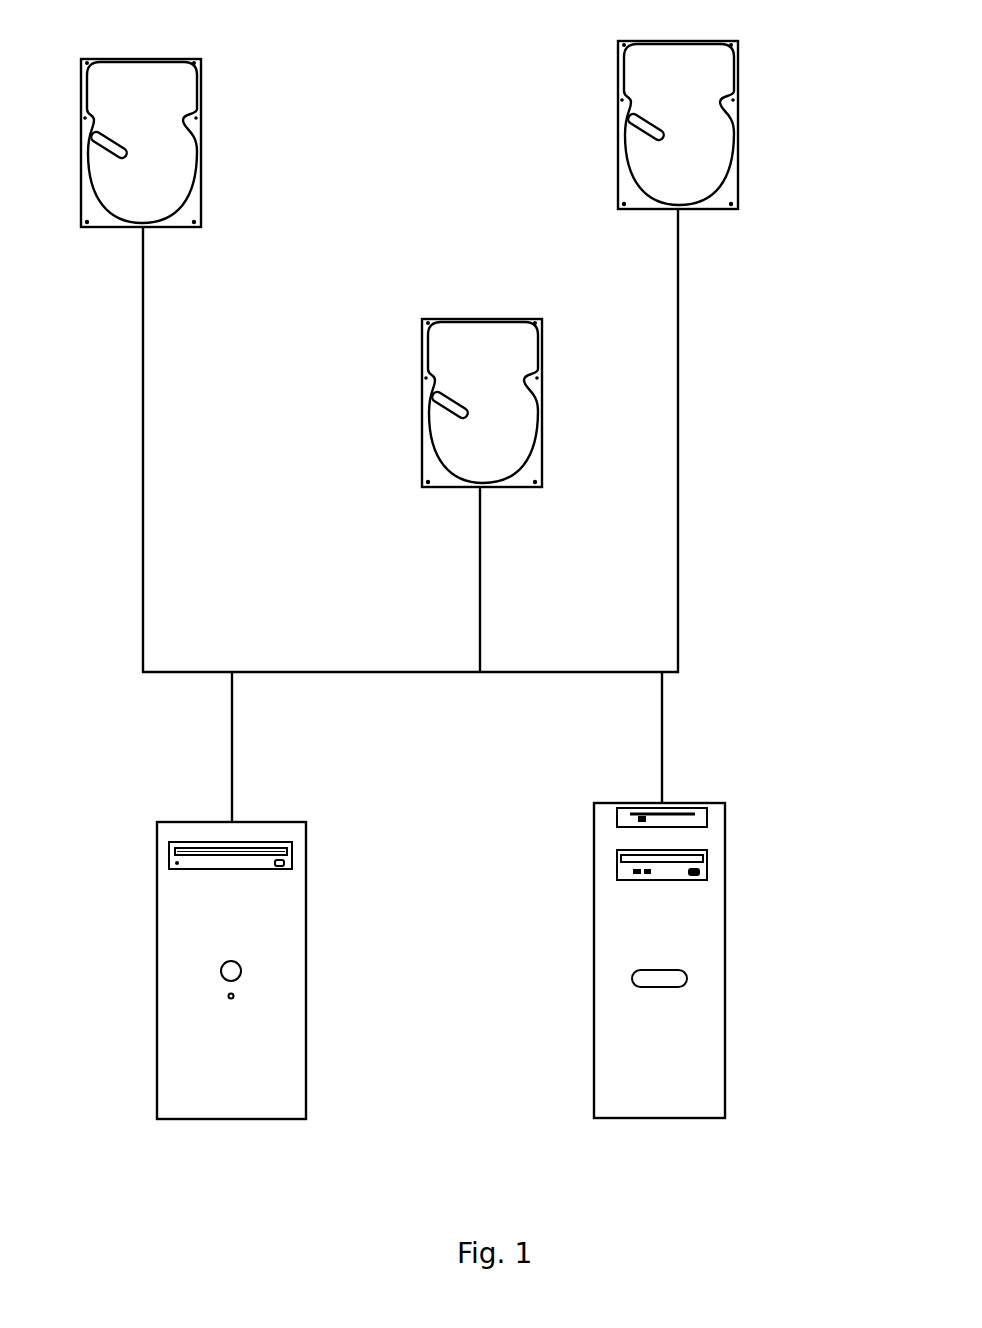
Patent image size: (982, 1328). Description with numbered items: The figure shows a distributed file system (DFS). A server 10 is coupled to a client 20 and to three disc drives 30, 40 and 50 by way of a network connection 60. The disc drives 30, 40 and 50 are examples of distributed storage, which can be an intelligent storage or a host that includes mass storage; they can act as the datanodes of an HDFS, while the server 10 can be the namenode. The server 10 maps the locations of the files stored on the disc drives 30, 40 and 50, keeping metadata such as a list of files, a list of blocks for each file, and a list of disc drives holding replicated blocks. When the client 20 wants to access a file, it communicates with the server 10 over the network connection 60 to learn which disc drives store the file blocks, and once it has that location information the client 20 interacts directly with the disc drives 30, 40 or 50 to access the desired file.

The server 10 is at (231, 1119).
The client 20 is at (725, 946).
The disc drive 30 is at (540, 487).
The disc drive 40 is at (737, 115).
The disc drive 50 is at (173, 60).
The network connection 60 is at (143, 450).